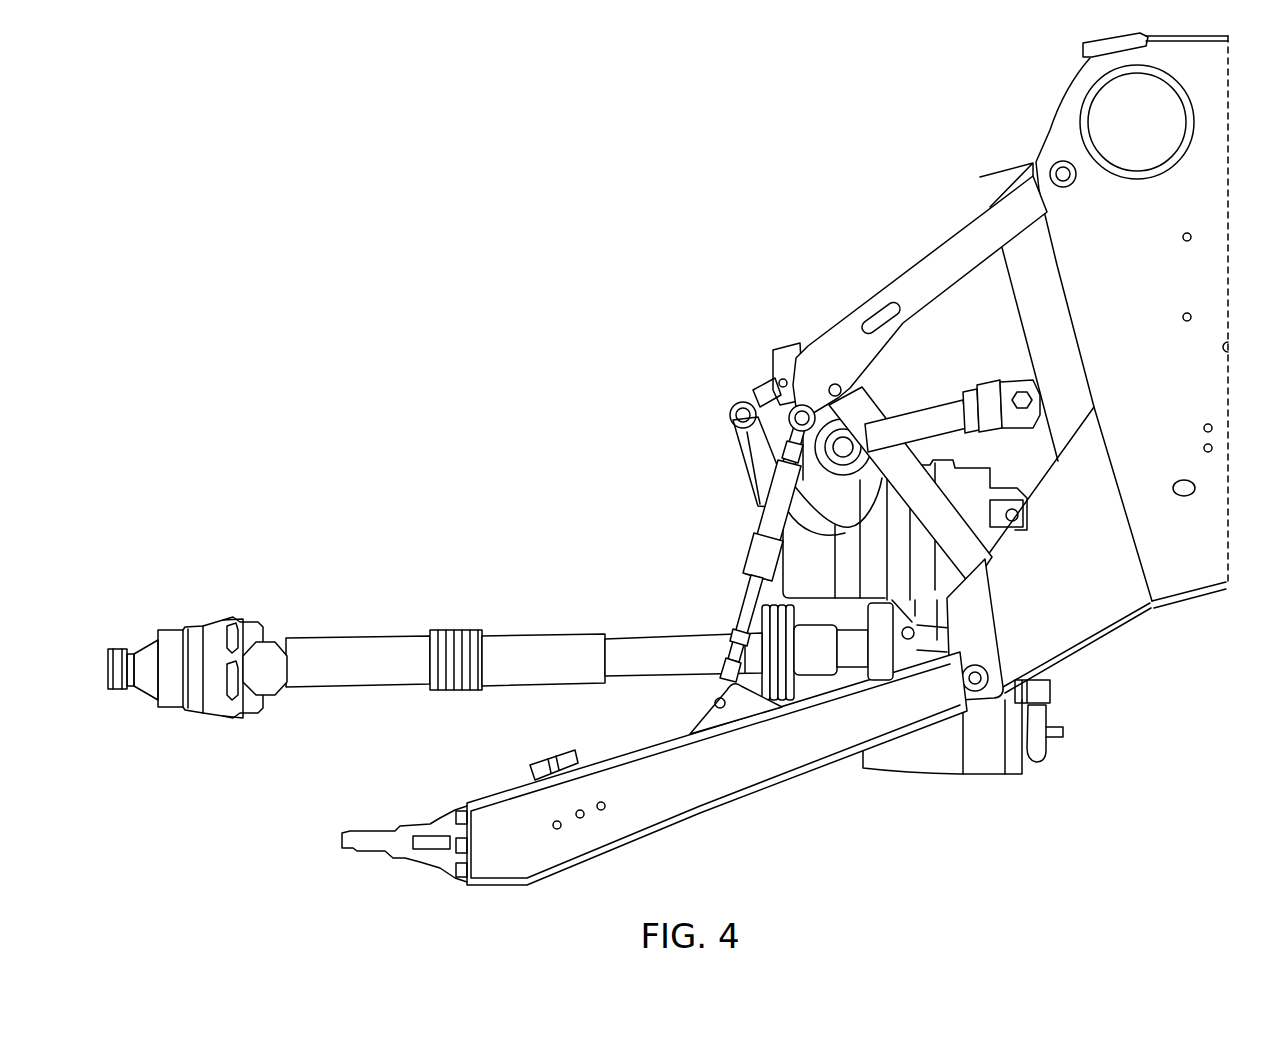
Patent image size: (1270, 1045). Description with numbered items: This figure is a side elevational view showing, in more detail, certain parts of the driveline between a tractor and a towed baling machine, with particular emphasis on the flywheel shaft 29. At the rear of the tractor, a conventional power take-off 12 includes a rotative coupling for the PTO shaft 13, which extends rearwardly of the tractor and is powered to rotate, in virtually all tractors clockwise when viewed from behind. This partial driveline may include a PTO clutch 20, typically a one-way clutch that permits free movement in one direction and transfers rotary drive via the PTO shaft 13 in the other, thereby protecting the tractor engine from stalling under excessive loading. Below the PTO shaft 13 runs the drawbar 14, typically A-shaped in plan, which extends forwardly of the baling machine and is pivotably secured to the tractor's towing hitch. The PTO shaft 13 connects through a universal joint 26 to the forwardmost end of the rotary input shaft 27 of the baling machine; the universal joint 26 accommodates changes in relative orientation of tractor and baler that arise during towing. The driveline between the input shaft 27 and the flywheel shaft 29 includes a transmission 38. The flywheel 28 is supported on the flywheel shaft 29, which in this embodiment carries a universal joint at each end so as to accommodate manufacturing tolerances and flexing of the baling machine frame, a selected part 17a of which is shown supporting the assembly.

The power take-off 12 is at (210, 641).
The PTO clutch 20 is at (242, 640).
The PTO shaft 13 is at (357, 653).
The drawbar 14 is at (608, 822).
The universal joint 26 is at (818, 662).
The rotary input shaft 27 is at (851, 652).
The transmission 38 is at (812, 562).
The flywheel 28 is at (1007, 183).
The flywheel shaft 29 is at (950, 397).
The baling machine frame part 17a is at (1074, 617).